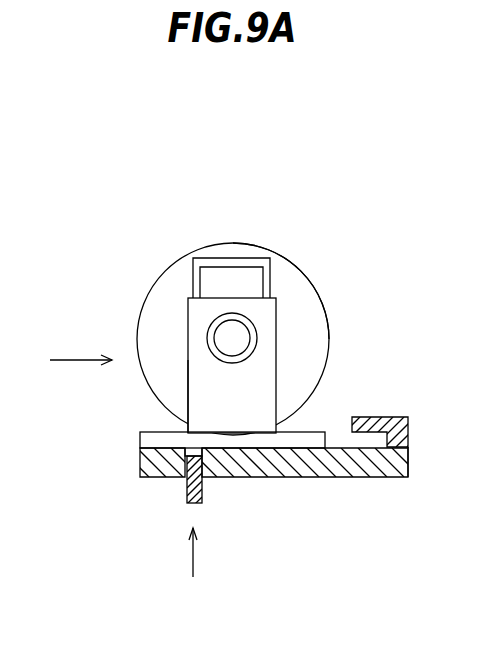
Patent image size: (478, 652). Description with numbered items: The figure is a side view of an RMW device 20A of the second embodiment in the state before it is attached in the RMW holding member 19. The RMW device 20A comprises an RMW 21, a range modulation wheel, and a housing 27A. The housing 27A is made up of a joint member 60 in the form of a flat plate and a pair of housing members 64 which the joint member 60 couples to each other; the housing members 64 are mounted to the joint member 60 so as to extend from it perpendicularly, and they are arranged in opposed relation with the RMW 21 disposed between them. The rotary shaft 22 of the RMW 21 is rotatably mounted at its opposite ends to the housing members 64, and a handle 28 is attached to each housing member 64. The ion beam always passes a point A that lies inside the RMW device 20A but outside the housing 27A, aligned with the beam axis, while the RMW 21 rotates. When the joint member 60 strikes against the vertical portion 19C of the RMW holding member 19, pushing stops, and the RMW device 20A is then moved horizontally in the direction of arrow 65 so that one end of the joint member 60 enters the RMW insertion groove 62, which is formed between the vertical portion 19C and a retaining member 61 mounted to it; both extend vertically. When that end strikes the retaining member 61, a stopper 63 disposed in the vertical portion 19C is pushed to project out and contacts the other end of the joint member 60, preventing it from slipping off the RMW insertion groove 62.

The RMW (range modulation wheel) 21 is at (167, 270).
The RMW device 20A is at (298, 263).
The housing member 64 is at (188, 323).
The housing 27A is at (188, 377).
The handle 28 is at (247, 259).
The rotary shaft 22 is at (257, 322).
The point A is at (312, 342).
The arrow 65 (horizontal movement direction) 65 is at (70, 360).
The joint member 60 is at (283, 440).
The RMW holding member 19 is at (352, 477).
The vertical portion 19C is at (229, 472).
The retaining member 61 is at (408, 436).
The RMW insertion groove 62 is at (373, 438).
The stopper 63 is at (187, 493).